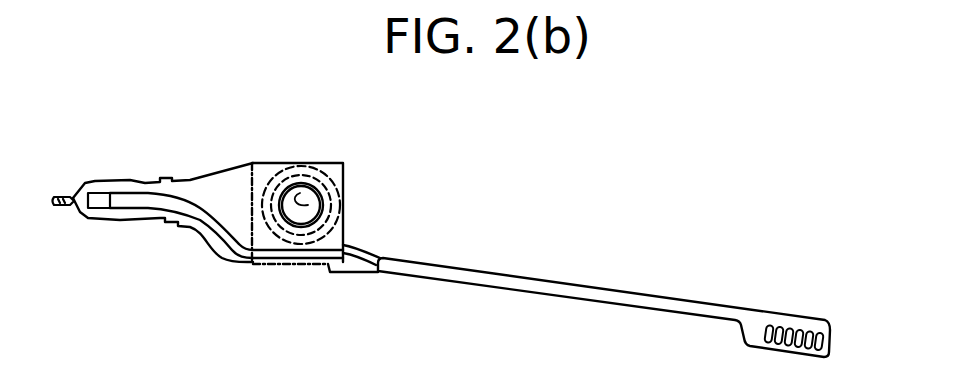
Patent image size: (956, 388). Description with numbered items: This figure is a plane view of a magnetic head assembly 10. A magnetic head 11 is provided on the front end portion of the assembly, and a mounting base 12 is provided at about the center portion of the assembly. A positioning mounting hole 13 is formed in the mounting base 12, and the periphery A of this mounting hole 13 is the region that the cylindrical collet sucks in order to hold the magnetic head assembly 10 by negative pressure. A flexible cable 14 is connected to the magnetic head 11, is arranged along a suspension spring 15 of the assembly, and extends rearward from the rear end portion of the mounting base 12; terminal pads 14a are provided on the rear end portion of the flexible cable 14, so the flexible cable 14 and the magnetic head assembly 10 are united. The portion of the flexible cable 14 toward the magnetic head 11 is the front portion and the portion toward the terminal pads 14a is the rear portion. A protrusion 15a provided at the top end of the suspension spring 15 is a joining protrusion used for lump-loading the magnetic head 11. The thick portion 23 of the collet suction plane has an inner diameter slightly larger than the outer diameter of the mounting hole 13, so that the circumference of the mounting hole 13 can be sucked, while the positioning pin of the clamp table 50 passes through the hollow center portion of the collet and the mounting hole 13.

The magnetic head assembly 10 is at (503, 203).
The magnetic head 11 is at (99, 195).
The mounting base 12 is at (220, 207).
The mounting hole 13 is at (305, 208).
The flexible cable 14 is at (655, 298).
The terminal pads 14a is at (797, 325).
The suspension spring 15 is at (231, 150).
The protrusion 15a is at (63, 212).
The thick portion 23 is at (345, 171).
The clamp table 50 is at (318, 160).
The periphery A is at (272, 230).